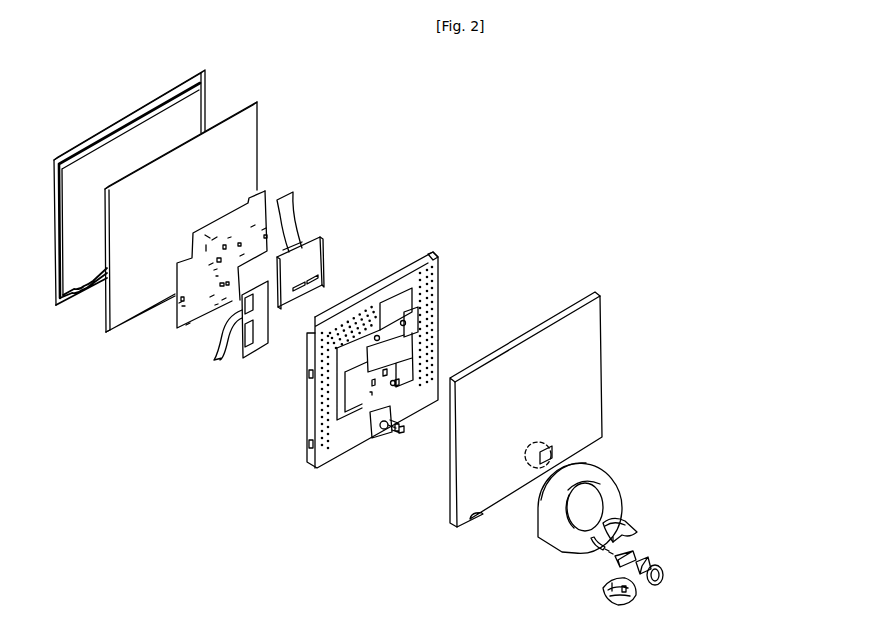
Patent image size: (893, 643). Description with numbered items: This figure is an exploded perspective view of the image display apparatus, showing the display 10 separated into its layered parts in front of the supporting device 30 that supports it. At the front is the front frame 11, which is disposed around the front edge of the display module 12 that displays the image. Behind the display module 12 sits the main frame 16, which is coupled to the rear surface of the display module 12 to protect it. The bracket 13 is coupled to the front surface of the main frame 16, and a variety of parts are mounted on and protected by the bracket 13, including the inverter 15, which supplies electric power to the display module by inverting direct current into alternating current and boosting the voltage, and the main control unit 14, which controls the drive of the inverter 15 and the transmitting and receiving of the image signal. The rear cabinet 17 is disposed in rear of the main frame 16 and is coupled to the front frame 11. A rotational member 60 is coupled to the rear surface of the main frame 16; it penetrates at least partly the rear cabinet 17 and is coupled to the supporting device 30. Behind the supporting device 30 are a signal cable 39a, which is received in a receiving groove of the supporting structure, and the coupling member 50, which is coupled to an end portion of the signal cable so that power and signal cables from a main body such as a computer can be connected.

The display 10 is at (358, 123).
The front frame 11 is at (148, 100).
The display module 12 is at (243, 107).
The bracket 13 is at (238, 213).
The main control unit 14 is at (320, 237).
The inverter 15 is at (255, 348).
The main frame 16 is at (410, 255).
The rear cabinet 17 is at (565, 328).
The supporting device 30 is at (616, 461).
The signal cable 39a is at (597, 543).
The coupling member 50 is at (646, 522).
The rotational member 60 is at (383, 446).